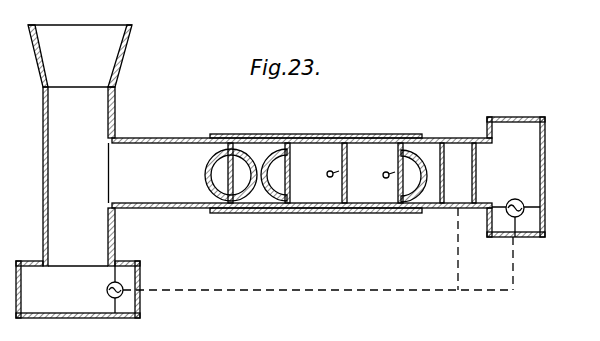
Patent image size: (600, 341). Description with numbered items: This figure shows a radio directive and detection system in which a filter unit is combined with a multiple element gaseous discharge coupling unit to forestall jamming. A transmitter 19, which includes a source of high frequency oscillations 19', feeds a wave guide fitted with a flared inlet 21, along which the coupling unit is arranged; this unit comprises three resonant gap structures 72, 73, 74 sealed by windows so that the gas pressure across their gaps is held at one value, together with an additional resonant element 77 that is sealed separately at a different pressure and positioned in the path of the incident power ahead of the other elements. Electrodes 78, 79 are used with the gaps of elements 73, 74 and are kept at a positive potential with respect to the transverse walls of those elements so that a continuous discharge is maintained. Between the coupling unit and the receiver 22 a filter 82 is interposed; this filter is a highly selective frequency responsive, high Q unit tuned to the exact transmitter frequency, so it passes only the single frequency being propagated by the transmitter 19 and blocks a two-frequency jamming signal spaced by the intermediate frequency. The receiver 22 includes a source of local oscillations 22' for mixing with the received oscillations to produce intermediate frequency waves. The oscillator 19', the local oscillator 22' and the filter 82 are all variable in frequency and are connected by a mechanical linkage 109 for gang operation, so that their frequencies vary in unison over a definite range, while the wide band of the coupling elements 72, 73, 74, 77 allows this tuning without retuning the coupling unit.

The inlet funnel 21 is at (132, 56).
The transmitter 19 is at (95, 292).
The source of high frequency oscillations 19' is at (95, 289).
The receiver 22 is at (531, 177).
The source of local oscillations 22' is at (518, 206).
The additional resonant element 77 is at (226, 200).
The resonant gap structure 72 is at (291, 208).
The resonant gap structure 73 is at (348, 208).
The resonant gap structure 74 is at (406, 213).
The electrode 78 is at (328, 177).
The electrode 79 is at (387, 178).
The filter 82 is at (458, 150).
The mechanical linkage 109 is at (355, 291).